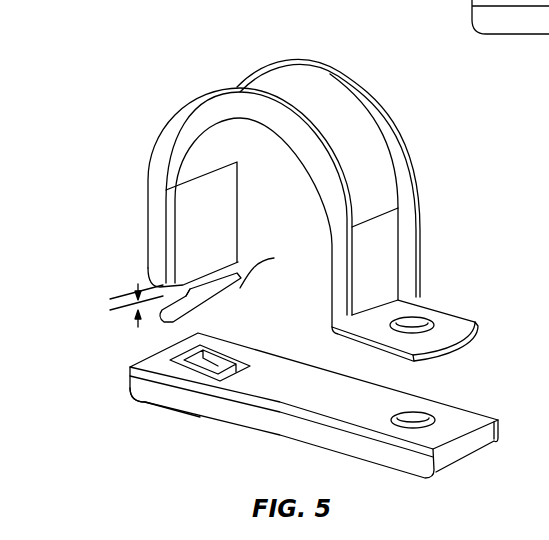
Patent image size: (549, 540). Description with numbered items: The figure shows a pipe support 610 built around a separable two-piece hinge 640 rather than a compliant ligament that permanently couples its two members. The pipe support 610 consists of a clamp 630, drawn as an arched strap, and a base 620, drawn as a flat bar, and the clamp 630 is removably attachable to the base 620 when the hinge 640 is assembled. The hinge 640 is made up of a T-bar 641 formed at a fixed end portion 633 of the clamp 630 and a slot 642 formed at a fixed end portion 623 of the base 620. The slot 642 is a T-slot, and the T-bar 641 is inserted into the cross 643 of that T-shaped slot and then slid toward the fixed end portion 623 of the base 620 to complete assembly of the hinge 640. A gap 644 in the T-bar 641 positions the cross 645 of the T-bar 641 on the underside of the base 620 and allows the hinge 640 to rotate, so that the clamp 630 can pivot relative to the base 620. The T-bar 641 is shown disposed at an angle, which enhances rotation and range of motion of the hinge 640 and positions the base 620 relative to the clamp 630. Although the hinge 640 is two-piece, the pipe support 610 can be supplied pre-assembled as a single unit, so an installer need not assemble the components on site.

The pipe support 610 is at (167, 52).
The base 620 is at (256, 448).
The fixed end portion of the base 623 is at (127, 398).
The clamp 630 is at (413, 115).
The fixed end portion of the clamp 633 is at (248, 258).
The two-piece hinge 640 is at (125, 318).
The T-bar 641 is at (200, 305).
The slot 642 is at (205, 363).
The cross of the T-slot 643 is at (200, 372).
The gap 644 is at (138, 284).
The cross of the T-bar 645 is at (275, 267).